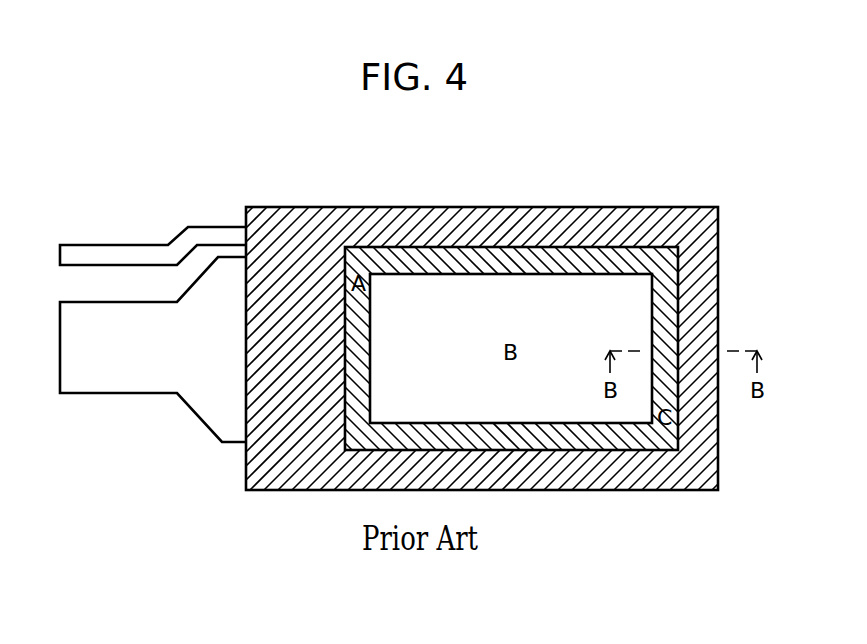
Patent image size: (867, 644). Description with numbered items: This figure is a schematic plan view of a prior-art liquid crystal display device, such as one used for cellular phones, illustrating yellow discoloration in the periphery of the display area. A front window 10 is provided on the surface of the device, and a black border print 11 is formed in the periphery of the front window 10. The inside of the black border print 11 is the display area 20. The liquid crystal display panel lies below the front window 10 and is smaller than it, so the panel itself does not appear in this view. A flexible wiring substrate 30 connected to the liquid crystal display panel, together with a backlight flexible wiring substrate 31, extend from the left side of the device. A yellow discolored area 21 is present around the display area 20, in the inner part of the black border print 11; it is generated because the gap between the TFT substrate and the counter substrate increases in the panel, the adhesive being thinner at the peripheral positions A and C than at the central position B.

The front window 10 is at (718, 265).
The black border print 11 is at (608, 226).
The display area 20 is at (458, 308).
The yellow discolored area 21 is at (535, 261).
The flexible wiring substrate 30 is at (113, 395).
The backlight flexible wiring substrate 31 is at (117, 245).